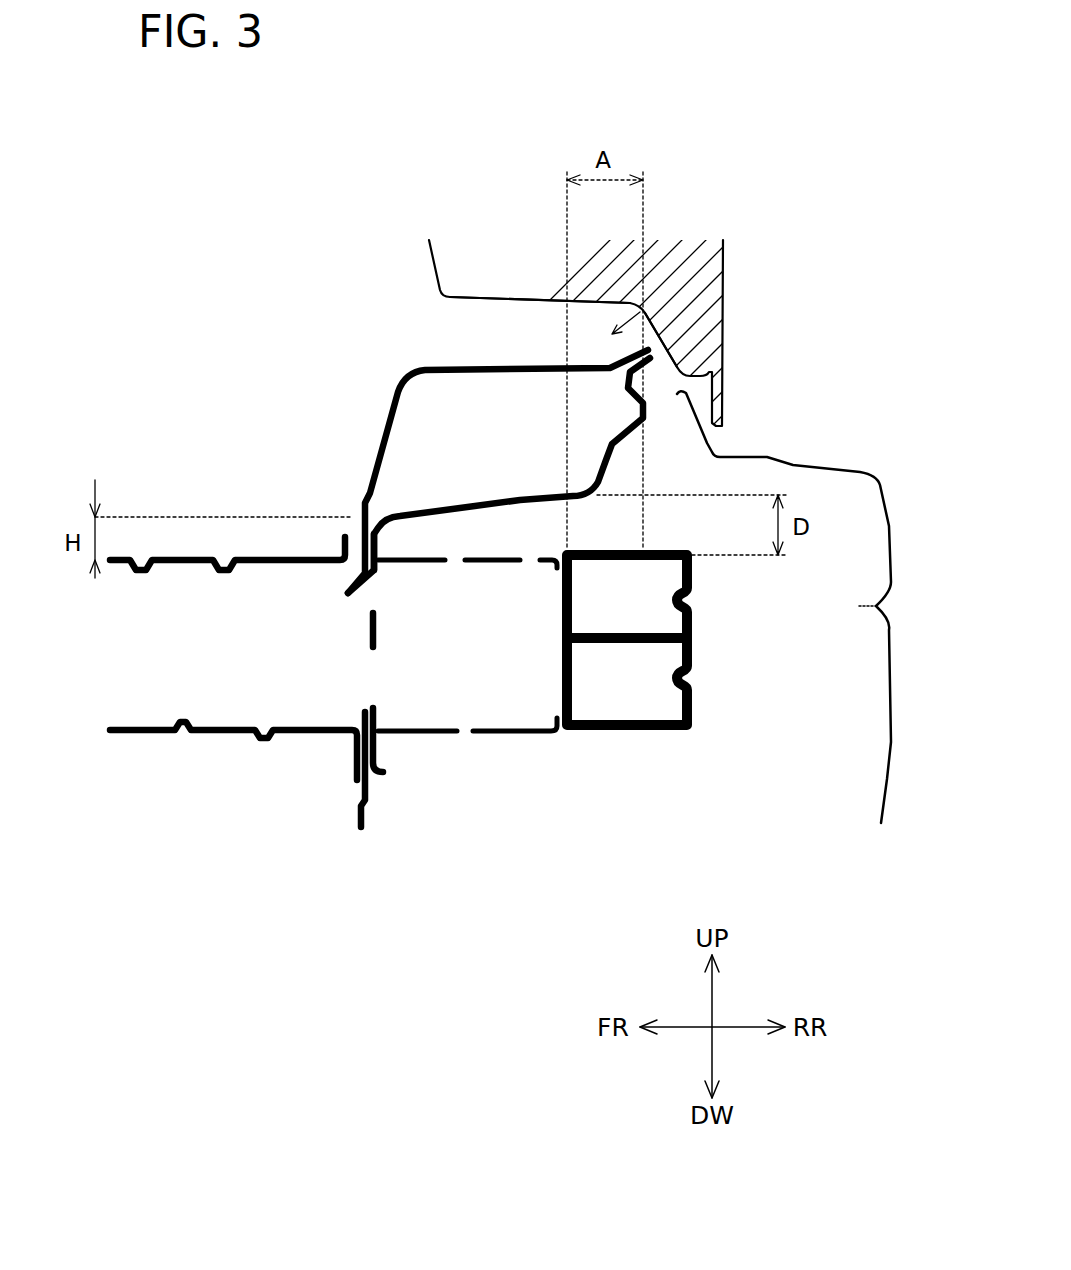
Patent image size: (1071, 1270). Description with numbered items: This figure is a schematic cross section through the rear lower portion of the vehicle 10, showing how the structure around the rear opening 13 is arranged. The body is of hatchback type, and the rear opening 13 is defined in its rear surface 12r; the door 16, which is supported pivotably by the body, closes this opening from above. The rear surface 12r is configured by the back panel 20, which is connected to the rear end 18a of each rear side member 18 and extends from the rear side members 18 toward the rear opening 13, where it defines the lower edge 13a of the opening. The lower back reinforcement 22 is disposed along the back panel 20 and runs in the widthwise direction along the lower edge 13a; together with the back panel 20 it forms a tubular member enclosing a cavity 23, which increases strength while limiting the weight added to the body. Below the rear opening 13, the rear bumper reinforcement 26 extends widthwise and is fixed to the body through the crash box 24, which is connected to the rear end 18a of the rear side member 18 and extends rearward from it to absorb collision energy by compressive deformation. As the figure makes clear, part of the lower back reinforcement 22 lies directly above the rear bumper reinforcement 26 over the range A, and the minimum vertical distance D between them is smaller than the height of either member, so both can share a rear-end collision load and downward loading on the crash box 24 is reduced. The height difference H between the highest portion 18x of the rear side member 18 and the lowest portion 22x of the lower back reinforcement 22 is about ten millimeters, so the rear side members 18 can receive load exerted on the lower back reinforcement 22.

The vehicle 10 is at (279, 203).
The rear surface 12r is at (875, 424).
The rear opening 13 is at (668, 306).
The lower edge 13a is at (653, 342).
The door 16 is at (700, 258).
The rear side member 18 is at (142, 735).
The rear end 18a is at (373, 748).
The highest portion 18x is at (197, 551).
The back panel 20 is at (362, 528).
The lower back reinforcement 22 is at (622, 440).
The lowest portion 22x is at (390, 513).
The enclosed cavity 23 is at (423, 398).
The crash box 24 is at (497, 736).
The rear bumper reinforcement 26 is at (697, 660).